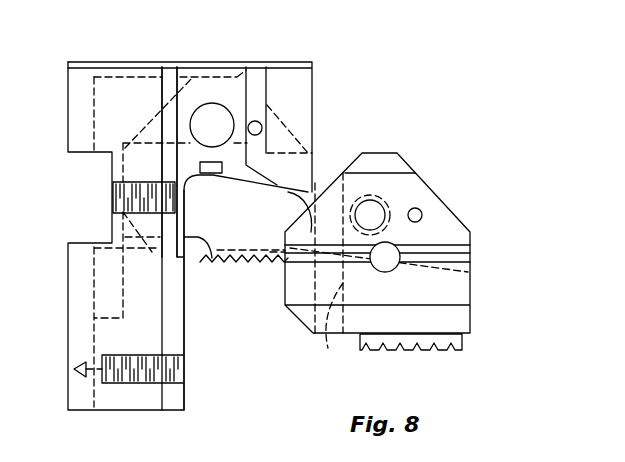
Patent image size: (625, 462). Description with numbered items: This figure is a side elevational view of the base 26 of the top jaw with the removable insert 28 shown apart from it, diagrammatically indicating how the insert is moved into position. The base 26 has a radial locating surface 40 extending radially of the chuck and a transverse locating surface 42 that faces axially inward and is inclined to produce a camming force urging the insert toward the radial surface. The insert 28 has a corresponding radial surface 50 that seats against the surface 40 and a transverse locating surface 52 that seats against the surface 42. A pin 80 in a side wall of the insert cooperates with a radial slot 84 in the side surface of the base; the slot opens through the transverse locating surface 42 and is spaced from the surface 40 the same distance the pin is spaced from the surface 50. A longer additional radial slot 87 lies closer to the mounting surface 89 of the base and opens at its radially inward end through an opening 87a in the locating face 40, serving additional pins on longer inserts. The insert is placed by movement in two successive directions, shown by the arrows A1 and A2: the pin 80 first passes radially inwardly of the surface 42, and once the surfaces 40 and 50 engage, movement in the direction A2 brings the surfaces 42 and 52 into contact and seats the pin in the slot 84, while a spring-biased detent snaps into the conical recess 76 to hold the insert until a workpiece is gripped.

The base 26 is at (145, 412).
The removable insert 28 is at (478, 279).
The radial locating surface 40 is at (210, 263).
The transverse locating surface 42 is at (307, 231).
The radial surface of insert 50 is at (343, 328).
The transverse locating surface of insert 52 is at (472, 233).
The conical recess 76 is at (216, 117).
The pin 80 is at (267, 105).
The radial slot 84 is at (262, 82).
The additional radial slot 87 is at (176, 82).
The opening 87a is at (181, 290).
The mounting surface / beveled portion 89 is at (215, 173).
The arrow A1 is at (236, 307).
The arrow A2 is at (142, 260).